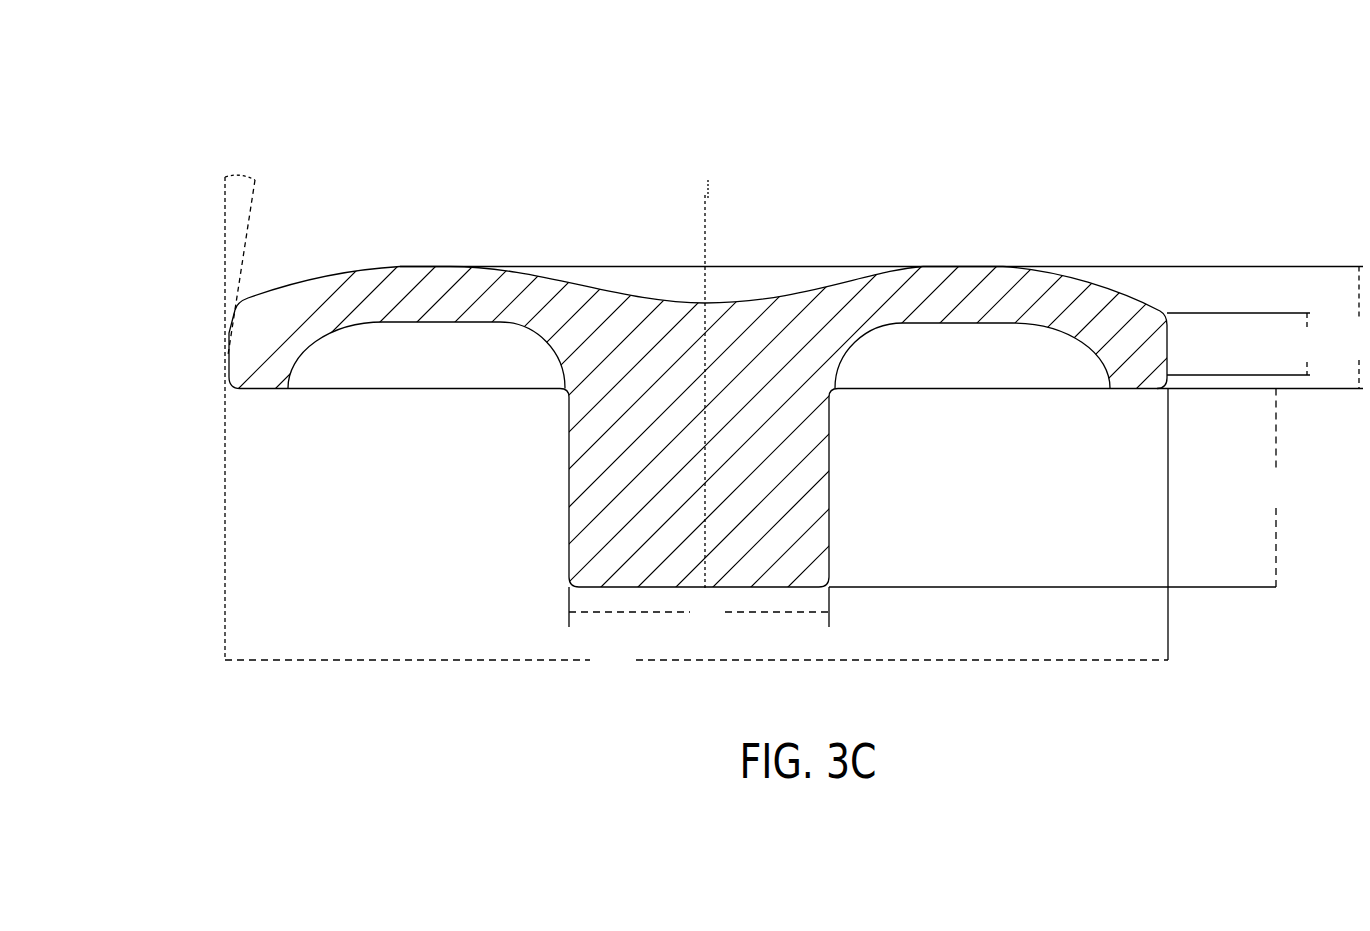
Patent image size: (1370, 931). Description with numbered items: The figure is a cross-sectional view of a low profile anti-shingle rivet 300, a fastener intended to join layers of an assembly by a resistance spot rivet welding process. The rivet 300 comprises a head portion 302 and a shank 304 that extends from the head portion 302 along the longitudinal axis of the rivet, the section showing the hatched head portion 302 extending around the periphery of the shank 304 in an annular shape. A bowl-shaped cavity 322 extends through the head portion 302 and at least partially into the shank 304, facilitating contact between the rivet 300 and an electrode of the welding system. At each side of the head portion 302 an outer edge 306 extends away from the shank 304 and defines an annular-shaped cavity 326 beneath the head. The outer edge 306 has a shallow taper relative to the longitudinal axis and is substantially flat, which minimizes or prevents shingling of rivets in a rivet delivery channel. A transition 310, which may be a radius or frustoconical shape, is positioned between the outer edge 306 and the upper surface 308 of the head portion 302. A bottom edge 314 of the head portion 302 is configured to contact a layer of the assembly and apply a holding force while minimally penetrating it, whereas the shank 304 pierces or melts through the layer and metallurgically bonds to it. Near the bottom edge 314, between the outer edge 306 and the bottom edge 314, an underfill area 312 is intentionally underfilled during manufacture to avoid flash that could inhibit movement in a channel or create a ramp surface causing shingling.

The anti-shingle rivet 300 is at (459, 124).
The head portion 302 is at (366, 268).
The shank 304 is at (585, 533).
The outer edge 306 is at (232, 362).
The upper surface 308 is at (1020, 268).
The transition 310 is at (1165, 311).
The underfill area 312 is at (1163, 385).
The bottom edge 314 is at (1108, 390).
The cavity 322 is at (645, 285).
The annular-shaped cavity 326 is at (435, 352).